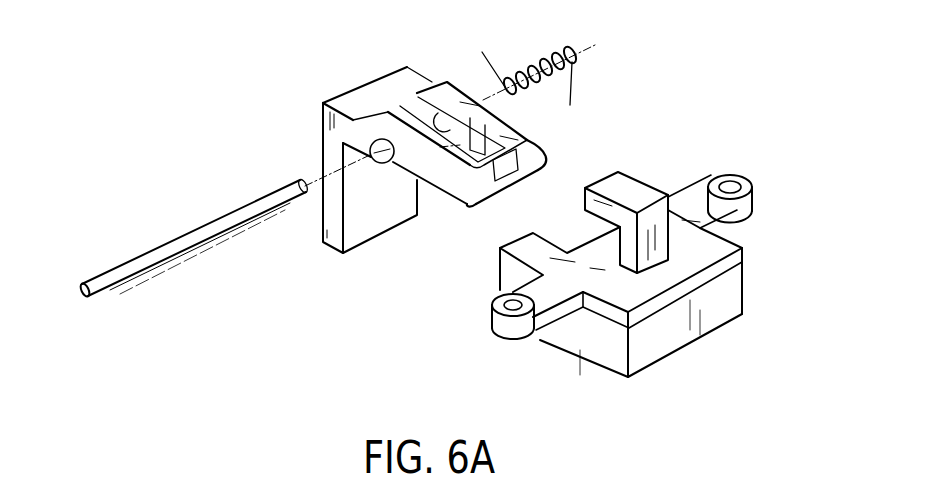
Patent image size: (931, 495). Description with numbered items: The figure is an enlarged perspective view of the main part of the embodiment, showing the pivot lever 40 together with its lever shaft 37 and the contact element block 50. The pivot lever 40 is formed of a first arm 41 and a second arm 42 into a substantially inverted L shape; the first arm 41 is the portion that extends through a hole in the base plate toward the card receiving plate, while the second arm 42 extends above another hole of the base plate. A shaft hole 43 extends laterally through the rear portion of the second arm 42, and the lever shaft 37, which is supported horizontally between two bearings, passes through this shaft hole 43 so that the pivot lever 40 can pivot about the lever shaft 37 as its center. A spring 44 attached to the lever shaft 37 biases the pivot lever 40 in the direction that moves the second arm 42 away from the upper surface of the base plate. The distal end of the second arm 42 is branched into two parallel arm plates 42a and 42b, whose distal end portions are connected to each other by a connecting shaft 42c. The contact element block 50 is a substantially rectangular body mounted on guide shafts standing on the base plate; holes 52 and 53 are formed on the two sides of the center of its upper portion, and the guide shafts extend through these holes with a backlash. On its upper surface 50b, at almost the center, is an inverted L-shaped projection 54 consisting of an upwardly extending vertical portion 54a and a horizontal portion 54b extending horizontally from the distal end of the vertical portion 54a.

The lever shaft 37 is at (142, 258).
The pivot lever 40 is at (375, 175).
The first arm 41 is at (330, 241).
The second arm 42 is at (487, 146).
The arm plate 42a is at (458, 183).
The arm plate 42b is at (545, 130).
The slot of slider 42c is at (510, 183).
The shaft hole 43 is at (385, 160).
The spring 44 is at (537, 60).
The contact element block 50 is at (621, 270).
The upper surface 50b is at (643, 285).
The hole 52 is at (496, 298).
The hole 53 is at (735, 180).
The inverted L-shaped projection 54 is at (664, 255).
The vertical portion 54a is at (662, 250).
The horizontal portion 54b is at (633, 192).